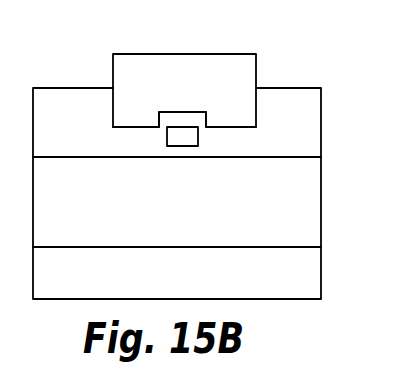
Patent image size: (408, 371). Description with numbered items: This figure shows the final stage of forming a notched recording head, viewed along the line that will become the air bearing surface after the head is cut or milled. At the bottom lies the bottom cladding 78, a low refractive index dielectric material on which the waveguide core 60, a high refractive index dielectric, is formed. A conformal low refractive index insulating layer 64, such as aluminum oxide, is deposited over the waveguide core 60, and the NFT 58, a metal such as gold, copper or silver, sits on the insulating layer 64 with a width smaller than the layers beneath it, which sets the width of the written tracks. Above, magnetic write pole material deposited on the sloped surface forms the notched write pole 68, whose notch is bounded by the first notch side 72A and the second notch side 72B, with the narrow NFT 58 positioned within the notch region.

The NFT 58 is at (182, 127).
The waveguide core 60 is at (311, 187).
The insulating layer 64 is at (304, 137).
The notched write pole 68 is at (160, 62).
The first notch side 72A is at (147, 119).
The second notch side 72B is at (225, 120).
The bottom cladding 78 is at (302, 273).